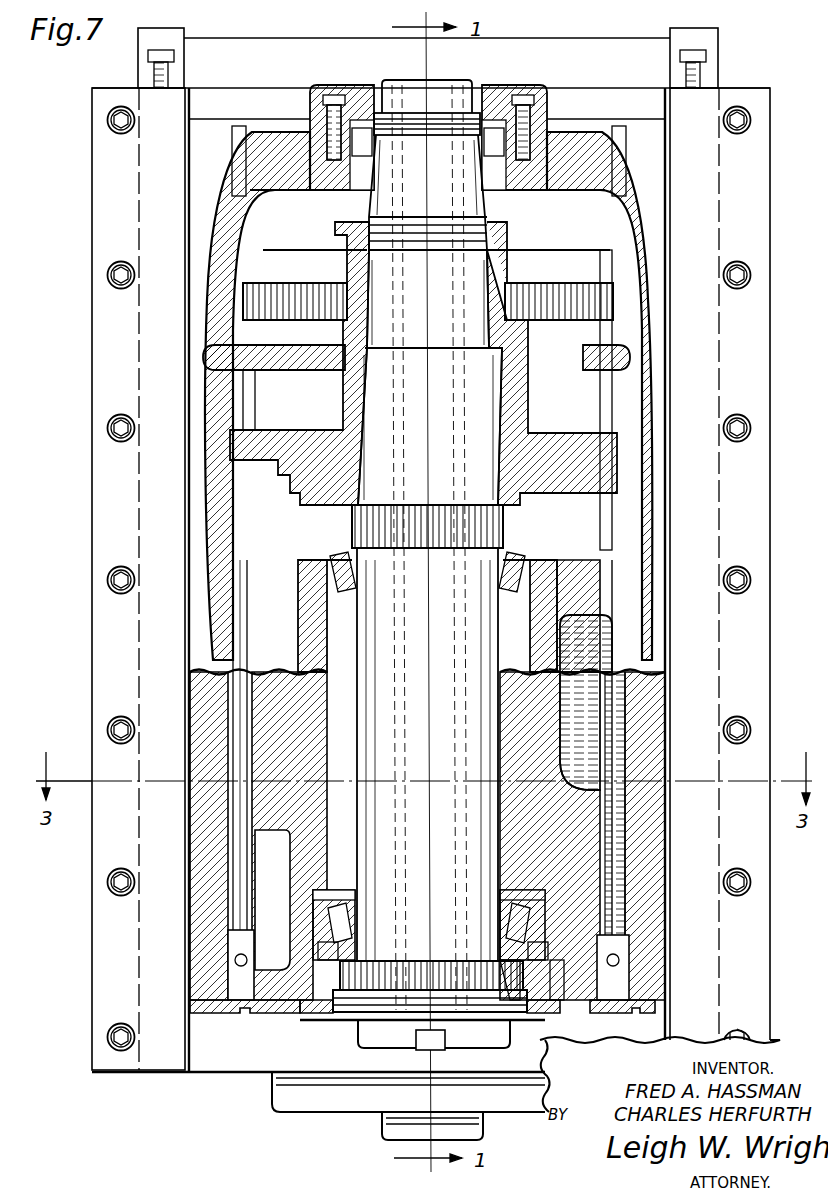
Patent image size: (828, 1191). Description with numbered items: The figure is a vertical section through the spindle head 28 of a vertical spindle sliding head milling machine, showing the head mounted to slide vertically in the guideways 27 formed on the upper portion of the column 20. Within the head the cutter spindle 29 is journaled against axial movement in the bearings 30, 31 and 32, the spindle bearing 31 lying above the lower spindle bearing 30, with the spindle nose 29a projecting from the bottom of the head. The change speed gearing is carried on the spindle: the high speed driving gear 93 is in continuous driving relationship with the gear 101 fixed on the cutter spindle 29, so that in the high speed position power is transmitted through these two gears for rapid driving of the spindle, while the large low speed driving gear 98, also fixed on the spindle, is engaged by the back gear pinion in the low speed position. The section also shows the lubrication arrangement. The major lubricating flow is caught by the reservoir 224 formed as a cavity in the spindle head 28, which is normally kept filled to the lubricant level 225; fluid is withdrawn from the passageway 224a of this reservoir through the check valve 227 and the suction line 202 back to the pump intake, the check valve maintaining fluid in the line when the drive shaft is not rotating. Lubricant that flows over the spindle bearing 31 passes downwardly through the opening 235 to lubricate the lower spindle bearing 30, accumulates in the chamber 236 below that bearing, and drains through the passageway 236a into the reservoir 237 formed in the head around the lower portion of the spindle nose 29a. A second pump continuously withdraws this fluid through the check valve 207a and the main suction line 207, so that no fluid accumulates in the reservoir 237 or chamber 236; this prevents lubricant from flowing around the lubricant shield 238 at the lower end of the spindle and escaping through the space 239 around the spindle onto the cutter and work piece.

The column 20 is at (738, 193).
The guideways 27 is at (144, 103).
The spindle head 28 is at (582, 836).
The cutter spindle 29 is at (422, 550).
The spindle nose 29a is at (394, 1047).
The lower spindle bearing 30 is at (540, 908).
The spindle bearing 31 is at (521, 566).
The bearing 32 is at (497, 188).
The high speed driving gear 93 is at (299, 297).
The low speed driving gear 98 is at (558, 363).
The gear 101 is at (350, 325).
The suction line 202 is at (614, 691).
The main suction line 207 is at (246, 770).
The check valve 207a is at (262, 958).
The reservoir 224 is at (580, 731).
The passageway 224a is at (660, 864).
The lubricant level 225 is at (578, 626).
The check valve 227 is at (628, 955).
The opening 235 is at (345, 716).
The chamber 236 is at (318, 1013).
The passageway 236a is at (286, 978).
The reservoir 237 is at (272, 900).
The lubricant shield 238 is at (546, 944).
The space 239 is at (535, 1020).